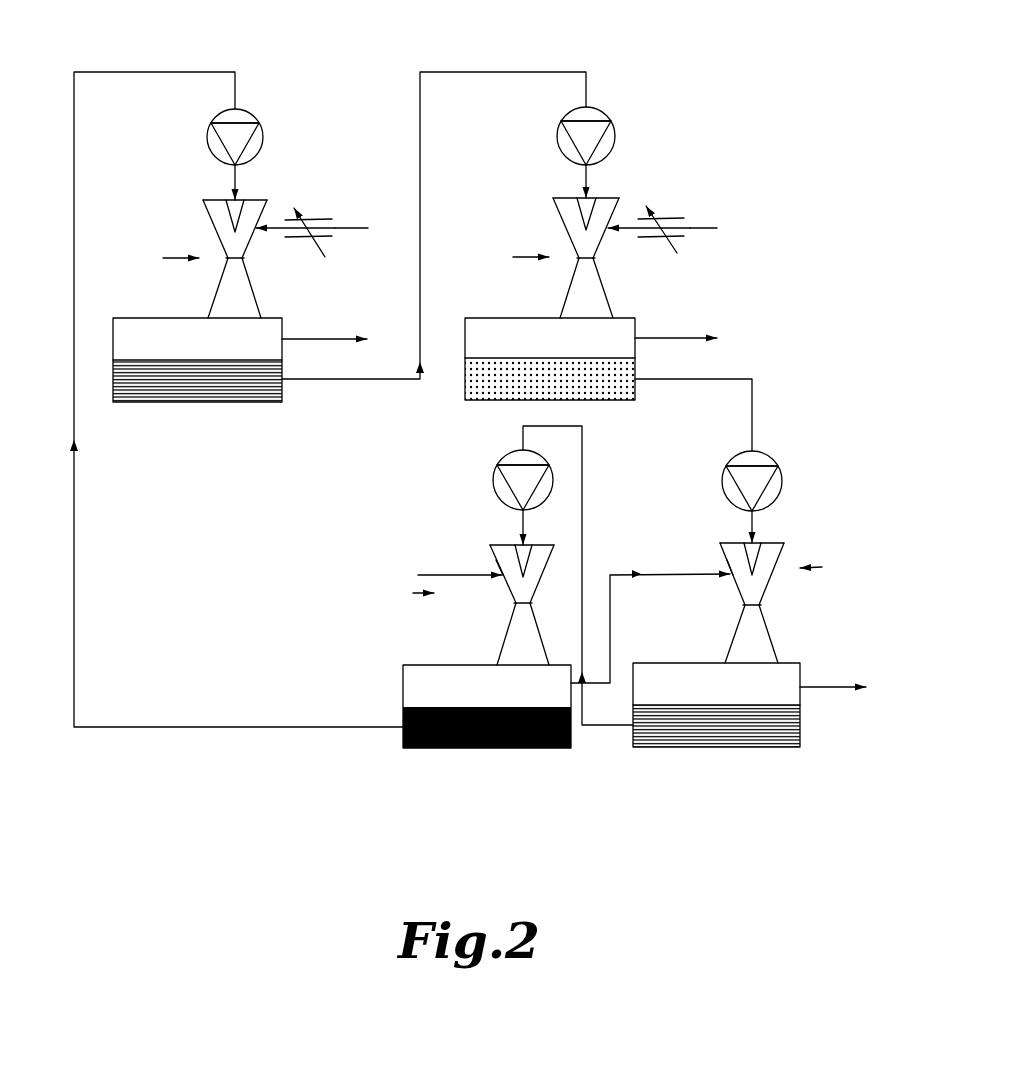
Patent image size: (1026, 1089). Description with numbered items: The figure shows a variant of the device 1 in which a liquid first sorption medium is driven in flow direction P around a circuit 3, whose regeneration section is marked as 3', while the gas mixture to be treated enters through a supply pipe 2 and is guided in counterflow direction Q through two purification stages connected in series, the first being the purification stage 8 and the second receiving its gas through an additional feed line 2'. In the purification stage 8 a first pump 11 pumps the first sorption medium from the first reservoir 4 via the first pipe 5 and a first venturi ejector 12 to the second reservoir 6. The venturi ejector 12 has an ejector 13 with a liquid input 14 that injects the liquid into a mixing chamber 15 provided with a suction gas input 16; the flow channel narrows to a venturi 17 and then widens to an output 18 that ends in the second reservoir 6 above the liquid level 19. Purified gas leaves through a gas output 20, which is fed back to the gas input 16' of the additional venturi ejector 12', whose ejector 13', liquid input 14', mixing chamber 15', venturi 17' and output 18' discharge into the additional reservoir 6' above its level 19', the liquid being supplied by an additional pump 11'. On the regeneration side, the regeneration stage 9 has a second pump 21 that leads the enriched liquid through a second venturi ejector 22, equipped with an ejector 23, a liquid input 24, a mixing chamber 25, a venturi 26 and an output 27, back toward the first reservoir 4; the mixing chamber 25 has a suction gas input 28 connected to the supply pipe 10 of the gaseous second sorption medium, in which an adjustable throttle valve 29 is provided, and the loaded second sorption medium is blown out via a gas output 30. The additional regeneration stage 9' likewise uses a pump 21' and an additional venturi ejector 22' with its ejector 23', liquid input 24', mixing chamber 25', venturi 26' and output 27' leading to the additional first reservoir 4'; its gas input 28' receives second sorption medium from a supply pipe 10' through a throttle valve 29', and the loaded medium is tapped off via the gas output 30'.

The device 1 is at (842, 52).
The supply pipe 2 is at (460, 549).
The feed line 2' is at (668, 546).
The circuit 3 is at (312, 372).
The second treatment unit 3' is at (593, 230).
The first reservoir 4 is at (197, 380).
The additional first reservoir 4' is at (550, 381).
The first pipe 5 is at (753, 398).
The second reservoir 6 is at (487, 729).
The additional reservoir 6' is at (716, 728).
The purification stage 8 is at (598, 449).
The regeneration stage 9 is at (255, 215).
The additional regeneration stage 9' is at (611, 215).
The second supply pipe 10 is at (371, 205).
The supply line 10' is at (719, 203).
The first pump 11 is at (555, 480).
The pump 11' is at (786, 481).
The first venturi ejector 12 is at (412, 594).
The additional venturi ejector 12' is at (830, 567).
The ejector 13 is at (565, 552).
The nozzle 13' is at (795, 551).
The liquid input 14 is at (576, 521).
The drive fluid inlet 14' is at (808, 521).
The mixing chamber 15 is at (535, 576).
The converging chamber 15' is at (779, 574).
The suction gas input 16 is at (466, 596).
The gas input 16' is at (695, 596).
The venturi 17 is at (492, 627).
The throat 17' is at (721, 628).
The output 18 is at (539, 634).
The diffuser 18' is at (794, 634).
The level 19 is at (482, 689).
The liquid in tank 19' is at (713, 687).
The gas output 20 is at (584, 677).
The second pump 21 is at (258, 119).
The pump 21' is at (612, 119).
The second venturi ejector 22 is at (164, 257).
The additional venturi ejector 22' is at (515, 256).
The ejector 23 is at (191, 204).
The nozzle 23' is at (542, 203).
The liquid input 24 is at (264, 175).
The drive fluid inlet 24' is at (619, 173).
The mixing chamber 25 is at (247, 236).
The converging chamber 25' is at (602, 235).
The venturi 26 is at (193, 280).
The throat 26' is at (546, 279).
The output 27 is at (257, 288).
The diffuser 27' is at (613, 288).
The suction gas input 28 is at (295, 198).
The gas input 28' is at (649, 198).
The throttle valve 29 is at (343, 248).
The throttle valve 29' is at (696, 247).
The gas output 30 is at (324, 322).
The gas output 30' is at (678, 321).